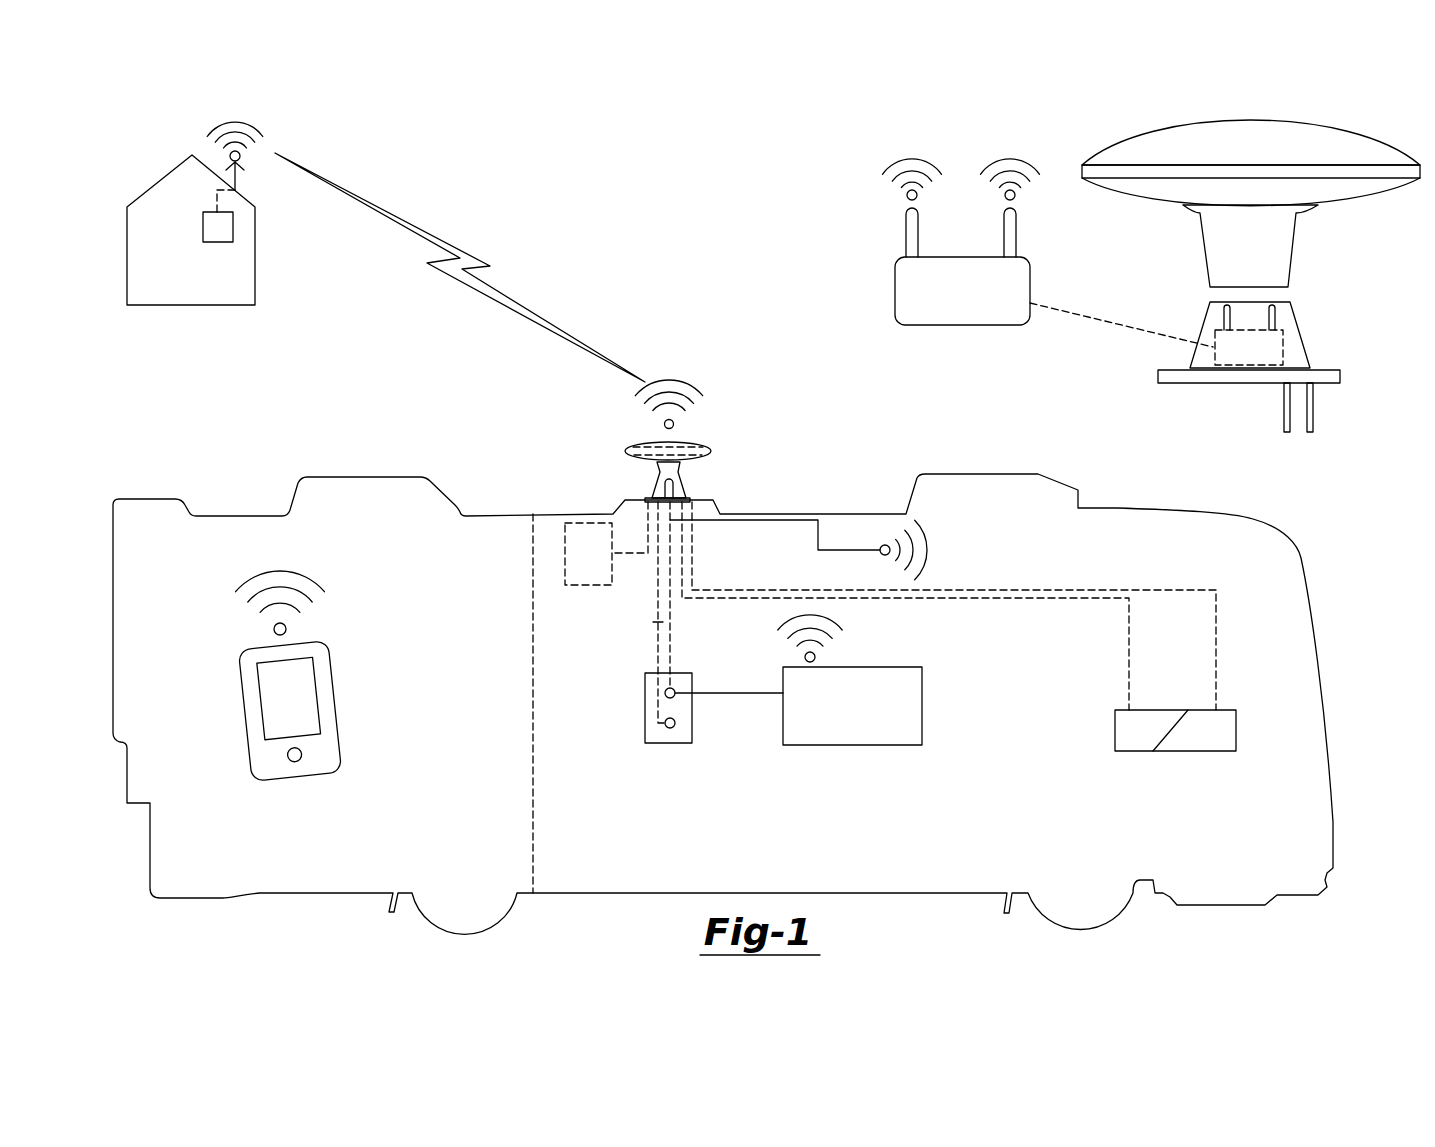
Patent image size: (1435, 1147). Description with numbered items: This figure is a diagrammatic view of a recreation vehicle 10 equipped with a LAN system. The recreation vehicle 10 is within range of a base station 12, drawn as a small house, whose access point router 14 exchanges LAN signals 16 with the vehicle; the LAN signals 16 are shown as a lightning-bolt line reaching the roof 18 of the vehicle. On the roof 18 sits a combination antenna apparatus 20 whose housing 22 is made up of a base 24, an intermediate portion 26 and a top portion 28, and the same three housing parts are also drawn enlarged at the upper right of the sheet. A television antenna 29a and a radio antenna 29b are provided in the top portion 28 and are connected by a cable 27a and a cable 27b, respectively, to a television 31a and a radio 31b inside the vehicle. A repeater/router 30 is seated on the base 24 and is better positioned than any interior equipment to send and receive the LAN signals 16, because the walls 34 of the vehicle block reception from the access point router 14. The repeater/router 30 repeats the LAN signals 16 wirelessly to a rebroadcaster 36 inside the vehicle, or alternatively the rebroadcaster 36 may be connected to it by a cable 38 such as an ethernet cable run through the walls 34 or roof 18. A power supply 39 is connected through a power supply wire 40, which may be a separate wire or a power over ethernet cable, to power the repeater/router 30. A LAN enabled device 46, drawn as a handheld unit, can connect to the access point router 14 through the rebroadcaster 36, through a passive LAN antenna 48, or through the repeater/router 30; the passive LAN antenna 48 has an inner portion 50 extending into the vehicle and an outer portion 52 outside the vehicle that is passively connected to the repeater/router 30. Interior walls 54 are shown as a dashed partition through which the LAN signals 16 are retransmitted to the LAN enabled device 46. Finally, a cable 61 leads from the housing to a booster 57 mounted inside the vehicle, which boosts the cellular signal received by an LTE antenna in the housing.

The recreation vehicle 10 is at (1336, 545).
The base station 12 is at (232, 278).
The access point router 14 is at (233, 228).
The LAN signals 16 is at (423, 228).
The roof 18 is at (1116, 508).
The combination antenna apparatus 20 is at (712, 432).
The housing 22 is at (699, 437).
The base 24 is at (1292, 350).
The intermediate portion 26 is at (1273, 253).
The cable 27a is at (1046, 599).
The cable 27b is at (1032, 589).
The top portion 28 is at (1285, 137).
The television antenna 29a is at (660, 443).
The radio antenna 29b is at (702, 457).
The repeater/router 30 is at (895, 292).
The television 31a is at (1167, 710).
The radio 31b is at (1200, 751).
The walls 34 is at (842, 827).
The rebroadcaster 36 is at (922, 705).
The cable 38 is at (1284, 413).
The power supply 39 is at (693, 727).
The power supply wire 40 is at (1313, 413).
The LAN enabled device 46 is at (338, 709).
The passive LAN antenna 48 is at (808, 539).
The inner portion 50 is at (848, 551).
The outer portion 52 is at (711, 523).
The interior walls 54 is at (545, 783).
The booster 57 is at (562, 558).
The cable 61 is at (642, 531).